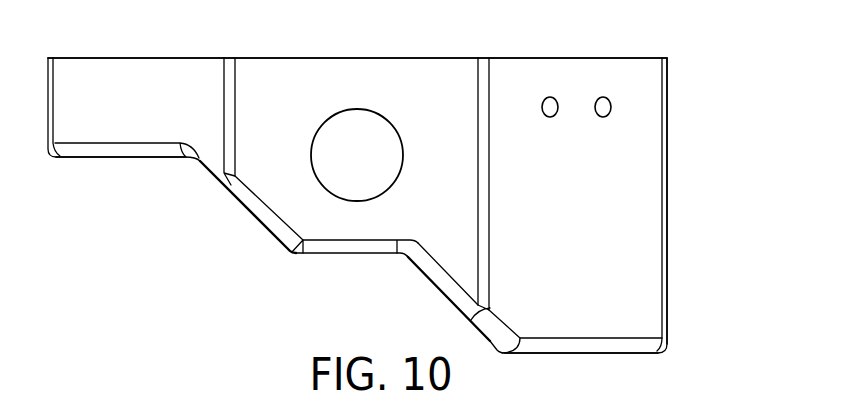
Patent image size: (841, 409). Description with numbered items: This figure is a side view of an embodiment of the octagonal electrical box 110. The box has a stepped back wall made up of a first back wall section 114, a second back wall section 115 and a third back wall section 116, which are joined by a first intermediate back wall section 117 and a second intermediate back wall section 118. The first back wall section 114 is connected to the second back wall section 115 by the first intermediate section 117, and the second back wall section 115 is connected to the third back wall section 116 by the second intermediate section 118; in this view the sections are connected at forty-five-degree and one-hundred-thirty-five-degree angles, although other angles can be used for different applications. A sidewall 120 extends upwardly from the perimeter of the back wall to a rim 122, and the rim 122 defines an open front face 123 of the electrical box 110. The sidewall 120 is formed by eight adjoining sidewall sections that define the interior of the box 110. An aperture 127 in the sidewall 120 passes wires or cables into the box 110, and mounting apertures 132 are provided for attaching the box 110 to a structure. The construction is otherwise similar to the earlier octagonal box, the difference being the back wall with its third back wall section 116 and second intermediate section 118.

The octagonal electrical box 110 is at (690, 101).
The first back wall section 114 is at (123, 157).
The second back wall section 115 is at (352, 257).
The third back wall section 116 is at (597, 355).
The first intermediate back wall section 117 is at (240, 205).
The second intermediate back wall section 118 is at (448, 300).
The sidewall 120 is at (640, 232).
The rim 122 is at (575, 58).
The open front face 123 is at (180, 58).
The apertures 127 is at (363, 118).
The mounting apertures 132 is at (603, 117).